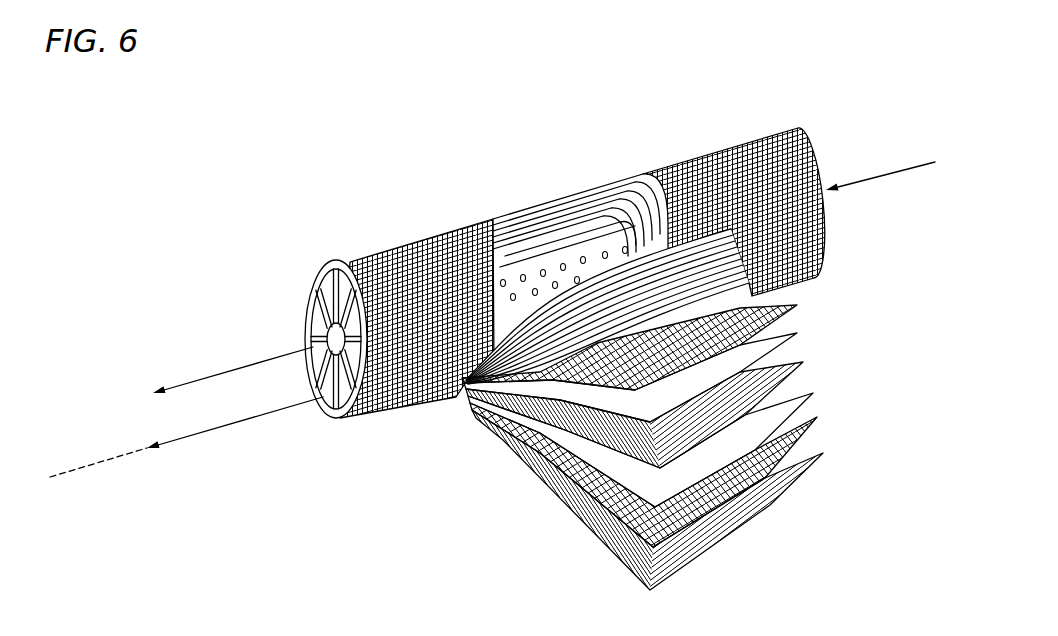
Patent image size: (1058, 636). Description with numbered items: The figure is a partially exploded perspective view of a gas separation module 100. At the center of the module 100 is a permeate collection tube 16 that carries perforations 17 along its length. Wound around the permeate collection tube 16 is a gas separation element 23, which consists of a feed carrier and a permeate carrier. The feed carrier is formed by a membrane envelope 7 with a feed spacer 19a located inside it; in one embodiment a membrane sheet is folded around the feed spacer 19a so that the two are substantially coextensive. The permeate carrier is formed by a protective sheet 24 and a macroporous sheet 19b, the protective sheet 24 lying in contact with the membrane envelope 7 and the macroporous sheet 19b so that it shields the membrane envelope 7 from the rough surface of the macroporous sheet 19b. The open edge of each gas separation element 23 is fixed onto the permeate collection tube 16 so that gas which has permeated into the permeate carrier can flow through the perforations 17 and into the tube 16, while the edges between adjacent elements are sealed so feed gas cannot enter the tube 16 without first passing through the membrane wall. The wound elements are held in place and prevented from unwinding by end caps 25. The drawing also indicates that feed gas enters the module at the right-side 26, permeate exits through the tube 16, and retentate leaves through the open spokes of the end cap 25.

The gas separation module 100 is at (316, 509).
The module side 26 is at (284, 272).
The end cap 25 is at (351, 250).
The perforations 17 is at (505, 268).
The permeate collection tube 16 is at (576, 255).
The gas separation element 23 is at (801, 301).
The feed spacer 19a is at (518, 390).
The membrane envelope 7 is at (534, 425).
The protective sheet 24 is at (562, 460).
The macroporous sheet 19b is at (598, 522).